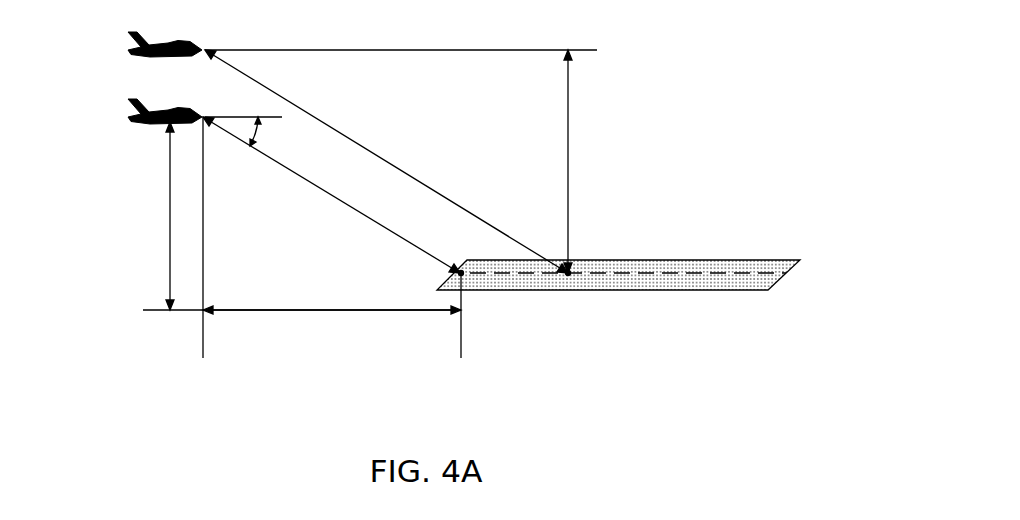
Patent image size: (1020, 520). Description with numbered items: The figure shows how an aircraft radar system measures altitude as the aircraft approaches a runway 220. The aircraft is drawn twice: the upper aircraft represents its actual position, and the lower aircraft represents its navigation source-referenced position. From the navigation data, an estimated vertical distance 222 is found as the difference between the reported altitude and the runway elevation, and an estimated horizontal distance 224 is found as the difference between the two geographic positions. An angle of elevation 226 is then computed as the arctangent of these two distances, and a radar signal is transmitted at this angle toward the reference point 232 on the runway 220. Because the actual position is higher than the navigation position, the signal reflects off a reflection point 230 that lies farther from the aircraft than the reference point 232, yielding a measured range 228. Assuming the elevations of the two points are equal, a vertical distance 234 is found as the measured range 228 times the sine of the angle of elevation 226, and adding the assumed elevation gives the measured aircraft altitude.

The runway 220 is at (740, 260).
The estimated vertical distance 222 is at (116, 216).
The estimated horizontal distance 224 is at (332, 334).
The angle of elevation 226 is at (265, 134).
The measured range 228 is at (385, 161).
The reflection point 230 is at (584, 283).
The reference point 232 is at (472, 283).
The vertical distance 234 is at (617, 161).